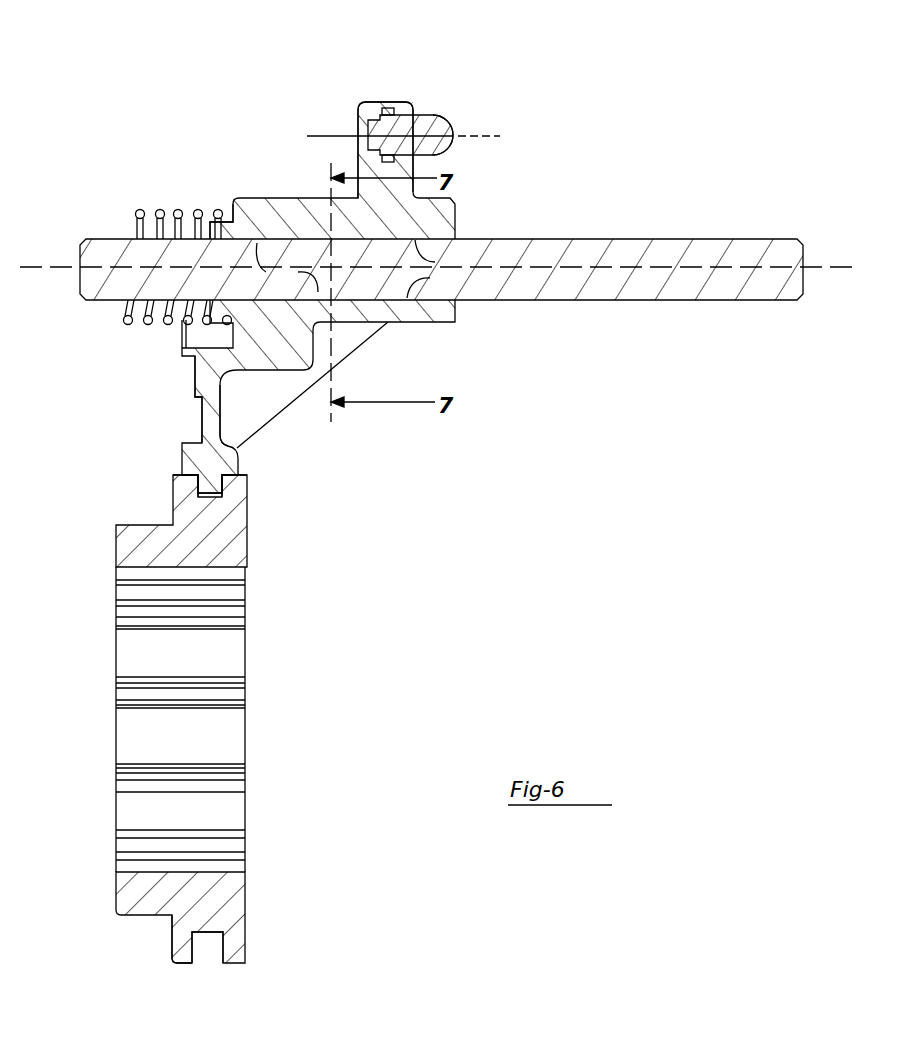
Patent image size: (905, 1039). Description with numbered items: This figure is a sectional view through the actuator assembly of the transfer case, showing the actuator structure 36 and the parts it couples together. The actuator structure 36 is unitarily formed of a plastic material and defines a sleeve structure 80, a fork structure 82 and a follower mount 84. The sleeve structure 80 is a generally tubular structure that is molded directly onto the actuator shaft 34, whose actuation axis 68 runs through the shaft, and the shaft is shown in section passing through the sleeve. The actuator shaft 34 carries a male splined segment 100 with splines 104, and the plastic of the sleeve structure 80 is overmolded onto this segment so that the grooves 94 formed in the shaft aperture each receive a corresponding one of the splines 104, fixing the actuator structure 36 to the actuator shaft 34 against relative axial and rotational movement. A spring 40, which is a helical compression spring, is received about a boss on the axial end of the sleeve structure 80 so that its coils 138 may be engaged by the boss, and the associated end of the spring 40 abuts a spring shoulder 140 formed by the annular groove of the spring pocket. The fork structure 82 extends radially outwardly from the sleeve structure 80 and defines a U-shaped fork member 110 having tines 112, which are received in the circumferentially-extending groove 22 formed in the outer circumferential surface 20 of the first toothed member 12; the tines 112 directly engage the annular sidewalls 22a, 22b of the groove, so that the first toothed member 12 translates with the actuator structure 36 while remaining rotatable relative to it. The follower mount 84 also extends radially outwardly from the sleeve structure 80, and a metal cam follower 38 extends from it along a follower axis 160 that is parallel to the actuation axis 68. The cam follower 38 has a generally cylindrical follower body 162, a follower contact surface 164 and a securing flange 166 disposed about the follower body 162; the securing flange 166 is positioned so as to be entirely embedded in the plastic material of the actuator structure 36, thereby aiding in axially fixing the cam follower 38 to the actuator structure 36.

The first toothed member 12 is at (240, 907).
The outer circumferential surface 20 is at (175, 963).
The circumferentially-extending groove 22 is at (200, 933).
The annular sidewall 22a is at (180, 495).
The annular sidewall 22b is at (240, 495).
The actuator shaft 34 is at (771, 255).
The actuator structure 36 is at (188, 389).
The cam follower 38 is at (418, 128).
The spring 40 is at (165, 210).
The actuation axis 68 is at (60, 266).
The sleeve structure 80 is at (301, 212).
The fork structure 82 is at (211, 397).
The follower mount 84 is at (307, 136).
The grooves 94 is at (427, 260).
The male splined segment 100 is at (384, 280).
The splines 104 is at (287, 267).
The U-shaped fork member 110 is at (210, 428).
The tines 112 is at (213, 468).
The coils 138 is at (148, 307).
The spring shoulder 140 is at (250, 197).
The follower axis 160 is at (500, 134).
The follower body 162 is at (404, 113).
The follower contact surface 164 is at (453, 131).
The securing flange 166 is at (386, 109).